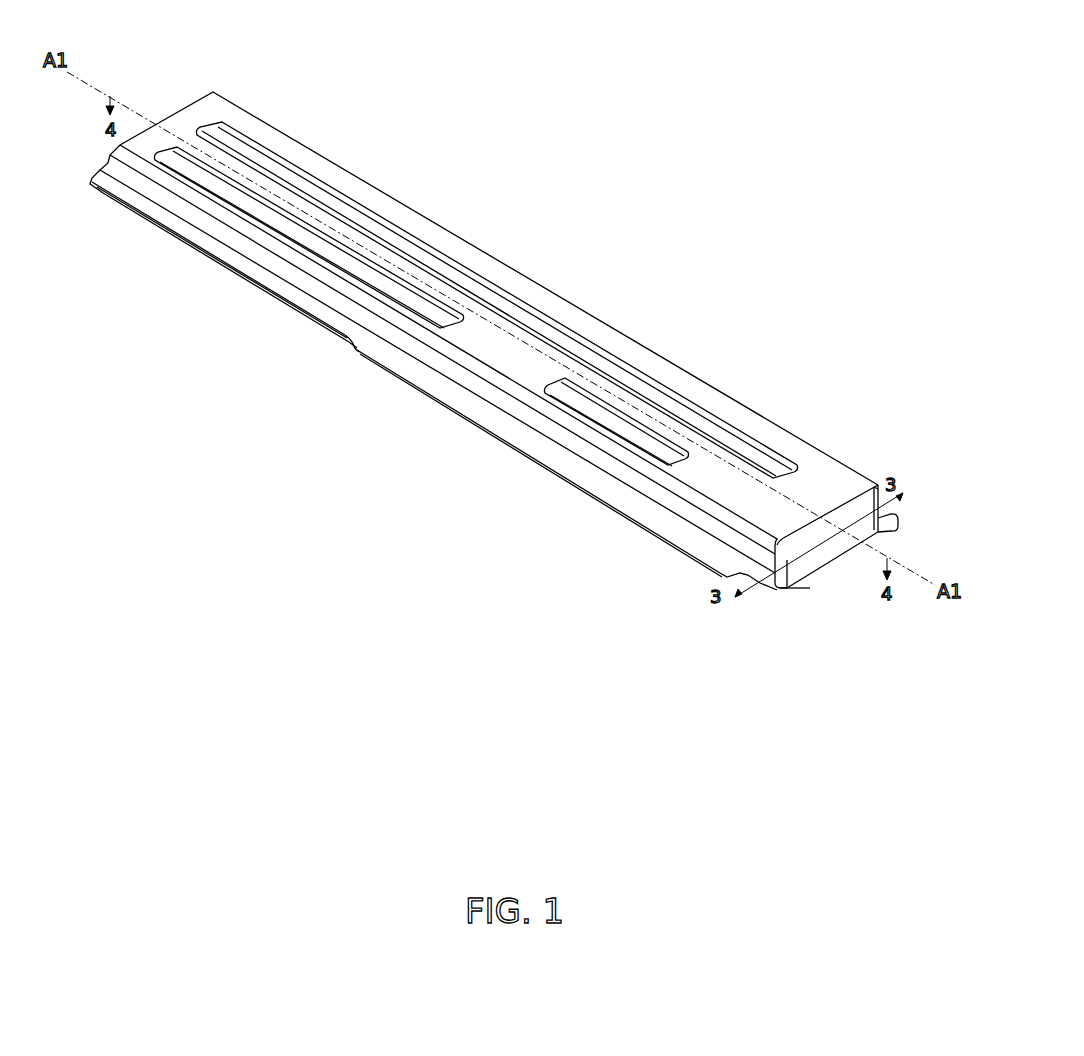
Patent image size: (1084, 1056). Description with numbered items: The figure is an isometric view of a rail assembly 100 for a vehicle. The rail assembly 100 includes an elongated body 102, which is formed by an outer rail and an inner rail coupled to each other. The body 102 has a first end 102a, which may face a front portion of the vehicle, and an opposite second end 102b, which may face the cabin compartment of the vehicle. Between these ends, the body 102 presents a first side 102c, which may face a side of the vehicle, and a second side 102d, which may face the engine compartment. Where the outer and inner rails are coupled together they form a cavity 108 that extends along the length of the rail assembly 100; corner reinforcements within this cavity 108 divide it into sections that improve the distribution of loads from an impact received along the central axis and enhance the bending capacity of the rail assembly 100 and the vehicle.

The rail assembly 100 is at (494, 326).
The body 102 is at (494, 328).
The first end 102a is at (797, 528).
The second end 102b is at (186, 103).
The first side 102c is at (347, 343).
The second side 102d is at (438, 225).
The cavity 108 is at (802, 587).